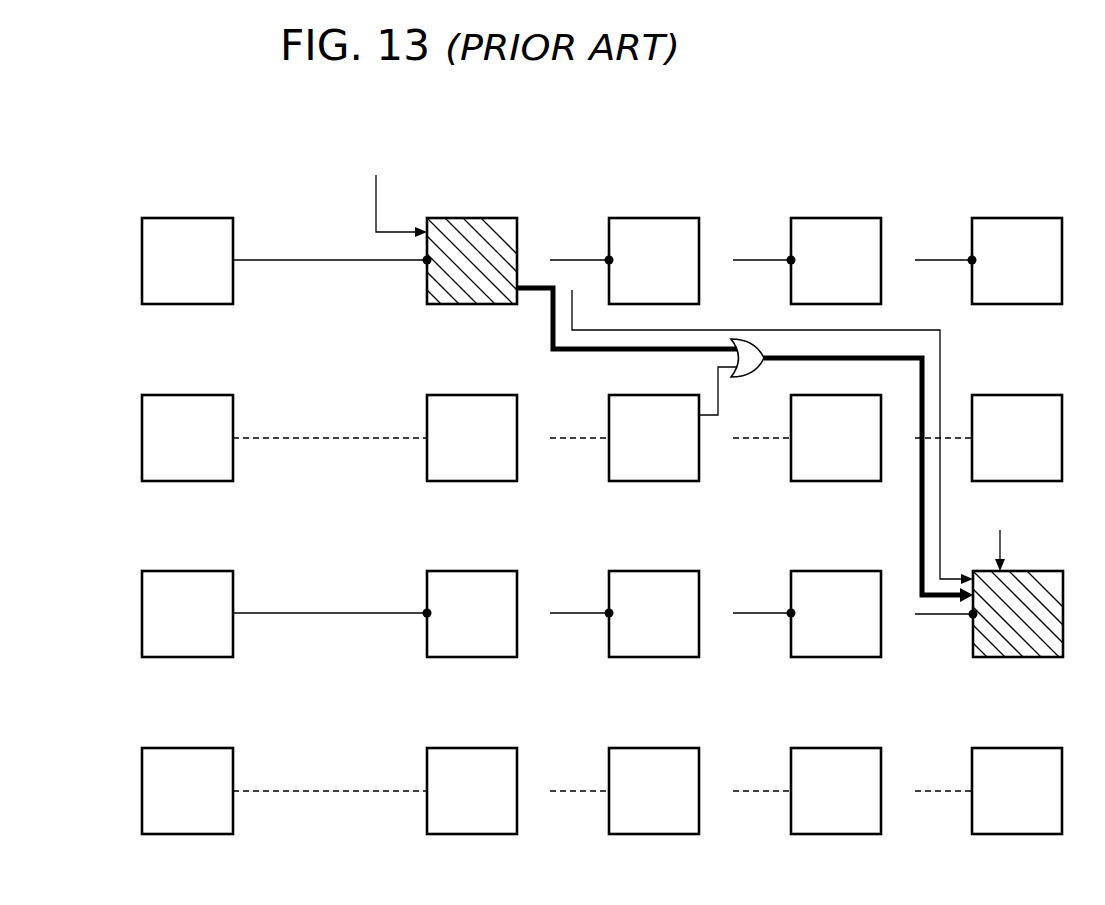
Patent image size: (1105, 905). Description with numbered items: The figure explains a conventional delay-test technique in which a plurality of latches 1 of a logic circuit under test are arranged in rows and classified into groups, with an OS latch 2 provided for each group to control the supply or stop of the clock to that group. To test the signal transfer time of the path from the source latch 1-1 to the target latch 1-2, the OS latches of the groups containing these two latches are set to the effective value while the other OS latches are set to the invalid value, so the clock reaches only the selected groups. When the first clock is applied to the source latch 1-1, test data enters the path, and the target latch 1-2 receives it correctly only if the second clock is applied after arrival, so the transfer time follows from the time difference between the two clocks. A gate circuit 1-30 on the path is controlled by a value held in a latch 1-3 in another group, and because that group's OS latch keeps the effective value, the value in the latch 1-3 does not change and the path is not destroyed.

The latches 1 is at (1075, 130).
The OS latches 2 is at (280, 130).
The source latch 1-1 is at (478, 208).
The target latch 1-2 is at (1019, 668).
The latch 1-3 is at (658, 482).
The gate circuit 1-30 is at (742, 379).